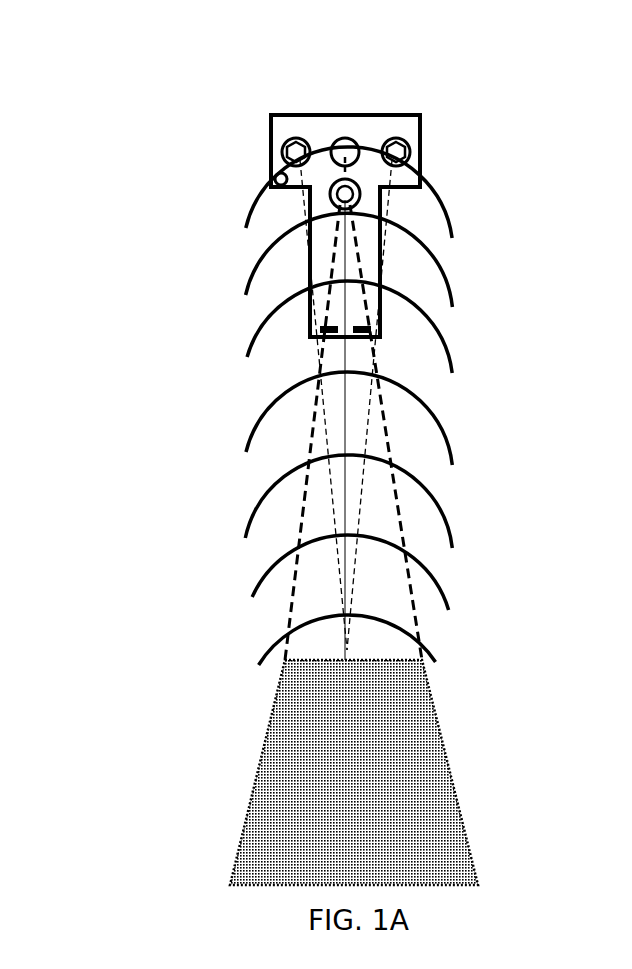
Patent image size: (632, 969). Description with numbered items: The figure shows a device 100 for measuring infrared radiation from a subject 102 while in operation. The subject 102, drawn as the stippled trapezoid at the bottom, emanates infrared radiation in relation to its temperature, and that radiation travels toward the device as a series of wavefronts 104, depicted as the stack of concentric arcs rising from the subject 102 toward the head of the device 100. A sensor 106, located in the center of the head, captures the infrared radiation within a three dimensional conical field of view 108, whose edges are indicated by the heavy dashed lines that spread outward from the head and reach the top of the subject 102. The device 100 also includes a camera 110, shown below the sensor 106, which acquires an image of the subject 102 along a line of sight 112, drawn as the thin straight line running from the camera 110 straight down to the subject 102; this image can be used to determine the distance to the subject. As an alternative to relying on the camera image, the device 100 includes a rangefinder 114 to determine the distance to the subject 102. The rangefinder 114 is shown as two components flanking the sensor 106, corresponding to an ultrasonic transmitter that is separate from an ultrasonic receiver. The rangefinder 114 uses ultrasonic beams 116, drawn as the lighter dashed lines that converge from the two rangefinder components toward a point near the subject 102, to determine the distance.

The device 100 is at (335, 97).
The subject 102 is at (245, 792).
The wavefronts 104 is at (242, 186).
The sensor 106 is at (365, 133).
The conical field of view 108 is at (298, 422).
The camera 110 is at (366, 196).
The line of sight 112 is at (355, 489).
The rangefinder 114 is at (283, 129).
The ultrasonic beams 116 is at (332, 580).